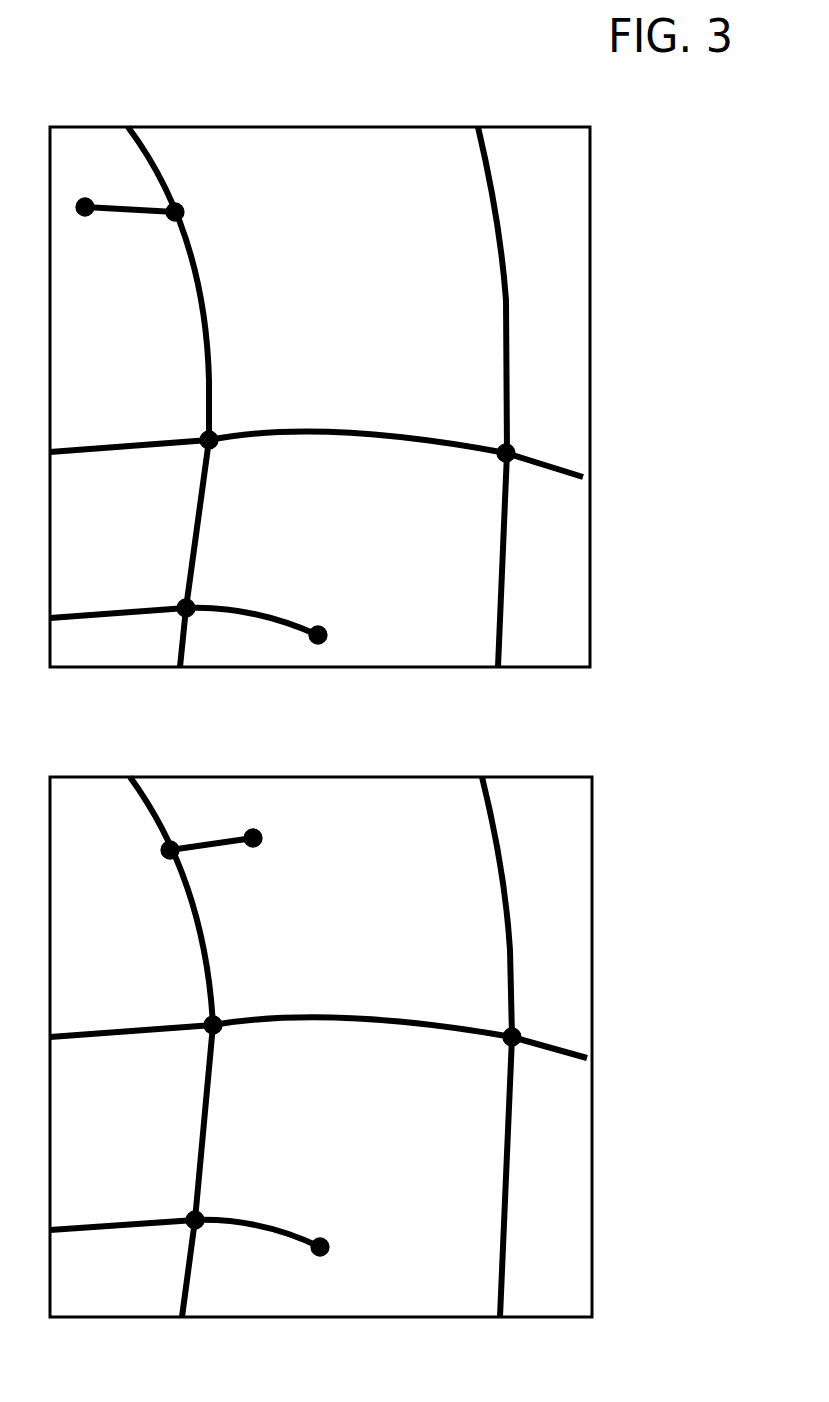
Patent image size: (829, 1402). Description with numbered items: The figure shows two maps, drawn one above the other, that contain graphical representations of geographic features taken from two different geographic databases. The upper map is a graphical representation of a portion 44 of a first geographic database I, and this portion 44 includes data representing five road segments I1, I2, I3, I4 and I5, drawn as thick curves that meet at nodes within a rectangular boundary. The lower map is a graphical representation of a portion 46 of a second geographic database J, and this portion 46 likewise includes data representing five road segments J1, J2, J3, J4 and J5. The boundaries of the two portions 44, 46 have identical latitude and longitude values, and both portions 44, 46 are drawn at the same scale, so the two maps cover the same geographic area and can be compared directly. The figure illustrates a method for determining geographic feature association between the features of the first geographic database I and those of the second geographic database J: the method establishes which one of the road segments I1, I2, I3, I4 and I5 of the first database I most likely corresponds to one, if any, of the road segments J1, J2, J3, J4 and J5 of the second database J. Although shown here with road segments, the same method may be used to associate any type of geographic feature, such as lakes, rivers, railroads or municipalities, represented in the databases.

The first geographic database I is at (602, 227).
The road segment I1 is at (257, 588).
The road segment I2 is at (185, 527).
The road segment I3 is at (306, 408).
The road segment I4 is at (192, 336).
The road segment I5 is at (134, 242).
The second geographic database J is at (603, 830).
The road segment J1 is at (224, 863).
The road segment J2 is at (179, 912).
The road segment J3 is at (321, 993).
The road segment J4 is at (187, 1120).
The road segment J5 is at (271, 1202).
The portion of the first geographic database 44 is at (420, 621).
The portion of the second geographic database 46 is at (430, 1271).